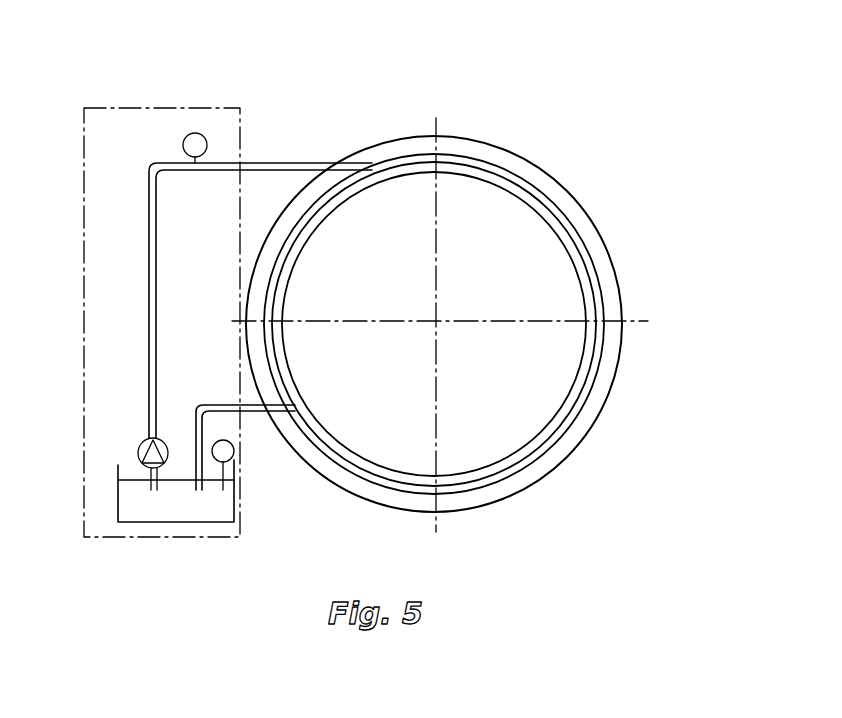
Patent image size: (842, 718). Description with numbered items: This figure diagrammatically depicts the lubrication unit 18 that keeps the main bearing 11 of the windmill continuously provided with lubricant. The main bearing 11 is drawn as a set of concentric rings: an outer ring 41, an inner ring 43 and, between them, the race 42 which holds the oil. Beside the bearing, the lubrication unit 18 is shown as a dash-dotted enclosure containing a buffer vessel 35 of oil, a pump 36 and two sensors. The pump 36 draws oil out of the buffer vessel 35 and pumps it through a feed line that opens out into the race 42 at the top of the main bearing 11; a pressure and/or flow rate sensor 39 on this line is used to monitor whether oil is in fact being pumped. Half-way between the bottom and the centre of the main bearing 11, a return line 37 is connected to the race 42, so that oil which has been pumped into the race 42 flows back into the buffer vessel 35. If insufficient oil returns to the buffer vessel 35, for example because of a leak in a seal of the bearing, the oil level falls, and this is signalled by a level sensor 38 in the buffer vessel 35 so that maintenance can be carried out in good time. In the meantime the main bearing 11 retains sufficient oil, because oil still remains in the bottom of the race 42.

The main bearing 11 is at (484, 104).
The lubrication unit 18 is at (88, 108).
The buffer vessel 35 is at (215, 515).
The pump 36 is at (138, 452).
The return line 37 is at (223, 404).
The level sensor 38 is at (234, 455).
The pressure and/or flow rate sensor 39 is at (207, 145).
The outer ring 41 is at (572, 203).
The race 42 is at (595, 270).
The inner ring 43 is at (572, 242).